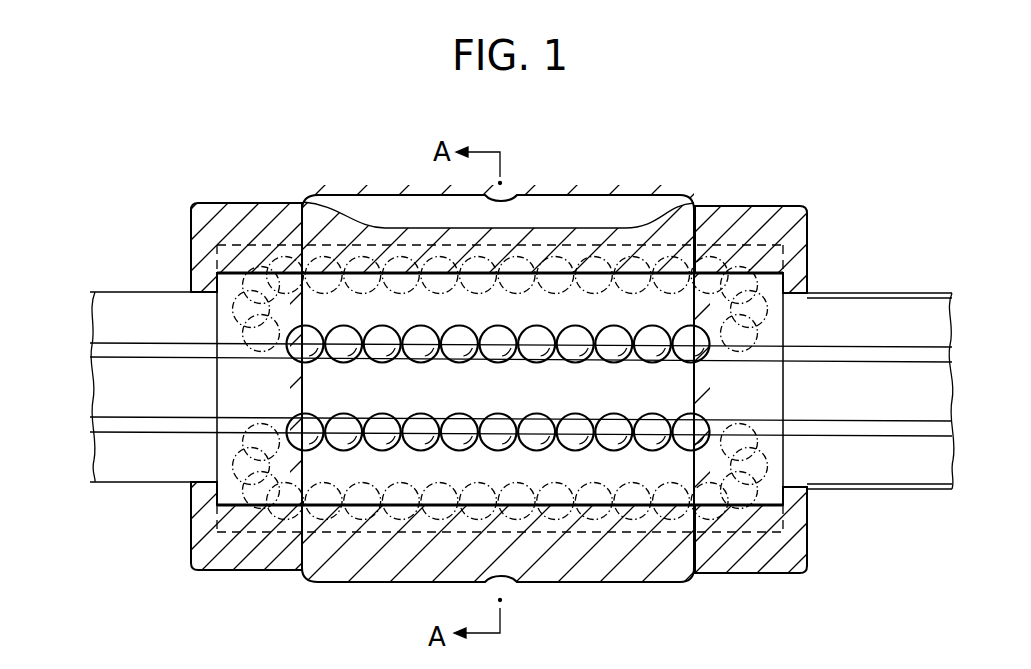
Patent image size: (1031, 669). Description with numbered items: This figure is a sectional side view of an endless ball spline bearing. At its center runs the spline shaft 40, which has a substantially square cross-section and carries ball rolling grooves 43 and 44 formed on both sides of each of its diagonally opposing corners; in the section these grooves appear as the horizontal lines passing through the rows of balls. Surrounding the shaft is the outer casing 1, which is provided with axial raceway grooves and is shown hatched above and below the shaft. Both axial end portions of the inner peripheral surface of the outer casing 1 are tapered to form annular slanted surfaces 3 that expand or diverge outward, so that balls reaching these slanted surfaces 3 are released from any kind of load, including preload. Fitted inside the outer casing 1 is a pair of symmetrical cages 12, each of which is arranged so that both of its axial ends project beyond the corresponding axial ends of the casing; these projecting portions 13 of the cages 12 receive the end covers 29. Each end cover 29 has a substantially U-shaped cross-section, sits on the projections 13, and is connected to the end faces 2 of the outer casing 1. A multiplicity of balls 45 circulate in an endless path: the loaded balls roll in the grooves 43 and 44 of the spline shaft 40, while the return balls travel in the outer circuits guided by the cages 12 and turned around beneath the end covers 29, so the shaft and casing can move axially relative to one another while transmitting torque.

The outer casing 1 is at (375, 582).
The end faces 2 is at (300, 224).
The annular slanted surfaces 3 is at (322, 263).
The cage 12 is at (648, 470).
The projecting portion 13 is at (724, 248).
The end cover 29 is at (212, 203).
The spline shaft 40 is at (888, 478).
The ball rolling groove 43 is at (897, 350).
The ball rolling groove 44 is at (908, 430).
The balls 45 is at (578, 330).